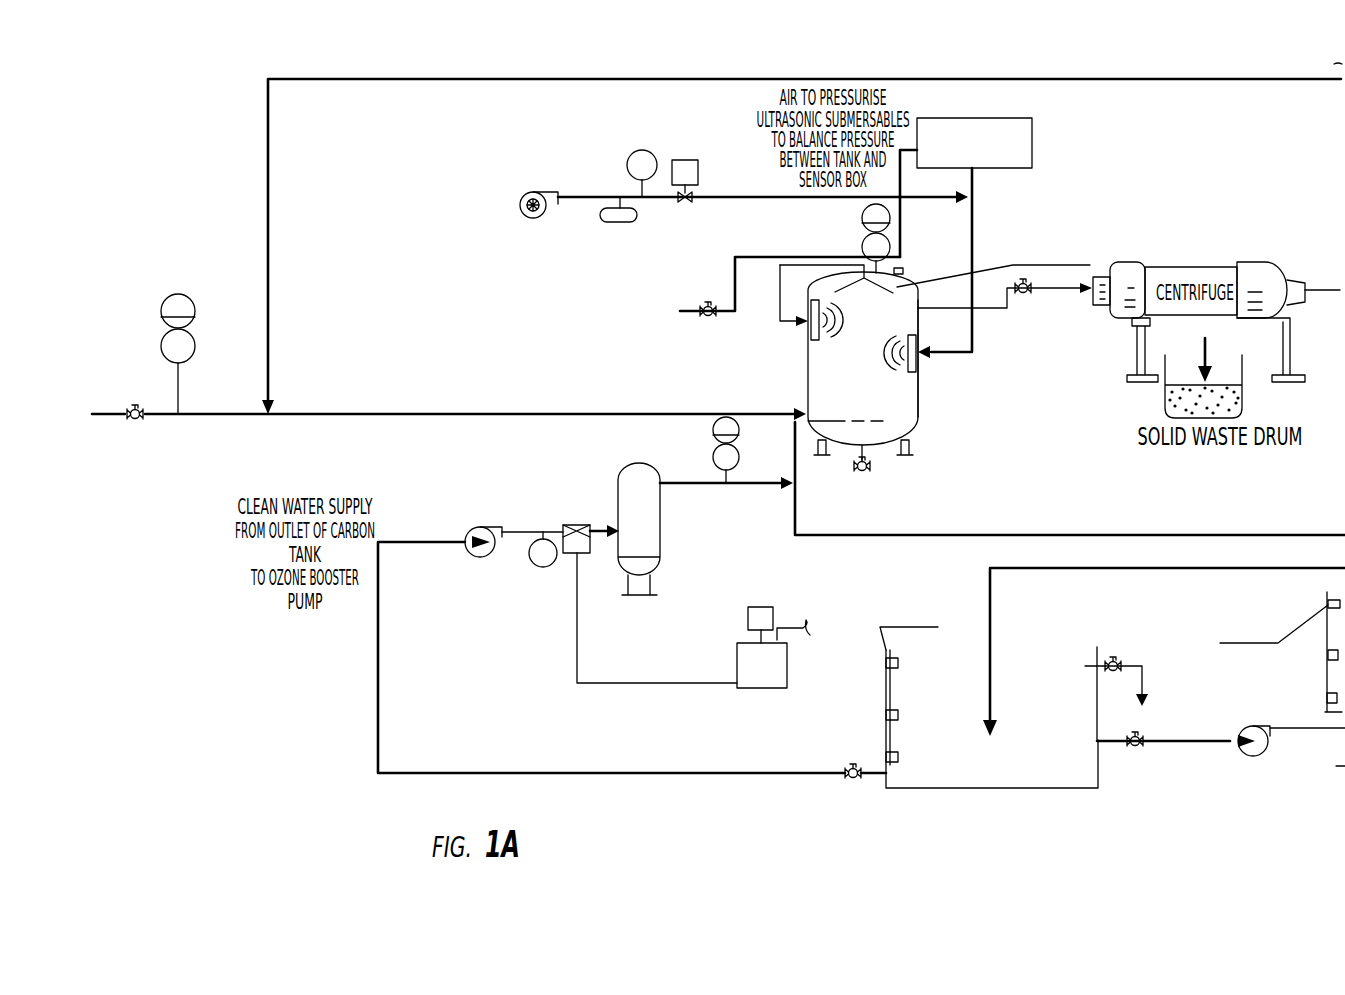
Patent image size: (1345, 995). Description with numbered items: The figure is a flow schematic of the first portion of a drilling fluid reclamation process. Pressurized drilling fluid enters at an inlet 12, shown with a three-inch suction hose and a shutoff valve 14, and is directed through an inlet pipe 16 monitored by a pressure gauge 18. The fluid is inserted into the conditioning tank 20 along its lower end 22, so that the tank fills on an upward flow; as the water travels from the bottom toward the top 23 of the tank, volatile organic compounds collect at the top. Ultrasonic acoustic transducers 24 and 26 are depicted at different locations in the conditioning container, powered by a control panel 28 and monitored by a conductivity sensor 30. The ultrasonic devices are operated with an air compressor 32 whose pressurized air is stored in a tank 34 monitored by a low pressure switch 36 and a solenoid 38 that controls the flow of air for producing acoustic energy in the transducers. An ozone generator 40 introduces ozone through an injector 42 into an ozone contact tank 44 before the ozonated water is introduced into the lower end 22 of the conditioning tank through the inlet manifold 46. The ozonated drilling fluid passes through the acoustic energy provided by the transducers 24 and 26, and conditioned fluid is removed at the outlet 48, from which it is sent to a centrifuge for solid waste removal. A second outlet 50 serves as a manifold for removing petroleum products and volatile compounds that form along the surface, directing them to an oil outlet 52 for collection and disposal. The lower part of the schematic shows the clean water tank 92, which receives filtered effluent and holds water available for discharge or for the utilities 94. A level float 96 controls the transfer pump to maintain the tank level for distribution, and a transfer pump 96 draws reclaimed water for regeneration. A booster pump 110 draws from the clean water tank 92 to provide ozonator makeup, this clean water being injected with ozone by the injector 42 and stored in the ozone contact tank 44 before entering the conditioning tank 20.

The inlet 12 is at (90, 432).
The shutoff valve 14 is at (138, 425).
The inlet pipe 16 is at (368, 414).
The pressure gauge 18 is at (185, 293).
The conditioning tank 20 is at (808, 357).
The lower end 22 is at (920, 413).
The top 23 is at (812, 289).
The ultrasonic acoustic transducer 24 is at (920, 363).
The ultrasonic acoustic transducer 26 is at (780, 323).
The control panel 28 is at (1020, 170).
The conductivity sensor 30 is at (898, 237).
The air compressor 32 is at (520, 200).
The tank 34 is at (593, 240).
The low pressure switch 36 is at (642, 120).
The solenoid 38 is at (700, 165).
The ozone generator 40 is at (778, 678).
The injector 42 is at (563, 520).
The ozone contact tank 44 is at (646, 590).
The inlet manifold 46 is at (807, 438).
The outlet 48 is at (912, 310).
The second outlet 50 is at (853, 280).
The oil outlet 52 is at (692, 302).
The clean water tank 92 is at (1057, 767).
The utilities 94 is at (1118, 662).
The level float 96 is at (907, 665).
The booster pump 110 is at (475, 537).